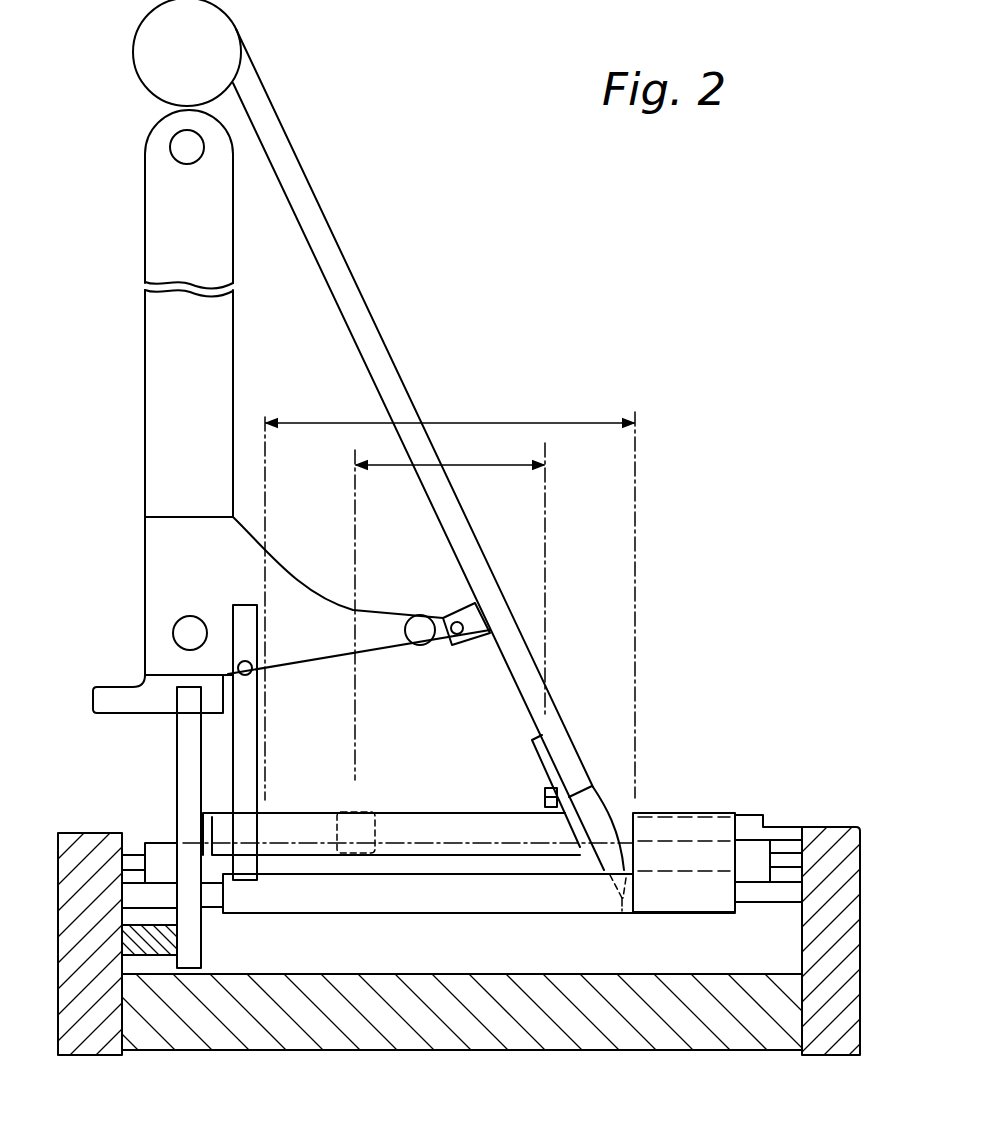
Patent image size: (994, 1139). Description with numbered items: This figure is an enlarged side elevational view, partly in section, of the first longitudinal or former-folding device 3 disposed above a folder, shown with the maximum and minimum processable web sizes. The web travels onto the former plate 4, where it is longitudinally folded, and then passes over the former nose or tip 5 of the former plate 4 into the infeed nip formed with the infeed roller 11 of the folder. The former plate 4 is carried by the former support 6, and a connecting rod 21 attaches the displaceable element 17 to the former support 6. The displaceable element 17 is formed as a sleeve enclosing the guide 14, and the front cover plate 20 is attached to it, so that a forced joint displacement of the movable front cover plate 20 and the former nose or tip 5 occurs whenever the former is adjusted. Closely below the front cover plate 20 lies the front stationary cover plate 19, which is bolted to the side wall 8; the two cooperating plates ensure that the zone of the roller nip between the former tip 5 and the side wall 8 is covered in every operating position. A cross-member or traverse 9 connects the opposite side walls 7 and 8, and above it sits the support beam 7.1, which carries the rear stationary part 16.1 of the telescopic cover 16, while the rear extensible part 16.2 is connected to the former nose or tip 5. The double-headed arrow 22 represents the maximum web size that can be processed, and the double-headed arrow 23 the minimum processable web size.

The first longitudinal or former-folding device 3 is at (418, 449).
The former plate 4 is at (367, 325).
The former nose or tip 5 is at (597, 815).
The former support 6 is at (160, 553).
The side wall 7 is at (98, 1017).
The support beam 7.1 is at (187, 777).
The side wall 8 is at (825, 1025).
The cross-member or traverse 9 is at (447, 1023).
The infeed roller 11 is at (762, 850).
The guide 14 is at (210, 898).
The telescopic cover 16 is at (408, 780).
The rear stationary part of the telescopic cover 16.1 is at (322, 823).
The rear extensible part of the telescopic cover 16.2 is at (467, 825).
The displaceable element 17 is at (550, 893).
The front stationary cover plate 19 is at (757, 813).
The front cover plate 20 is at (695, 813).
The connecting rod 21 is at (242, 738).
The double-headed arrow 22 is at (468, 422).
The double-headed arrow 23 is at (505, 465).